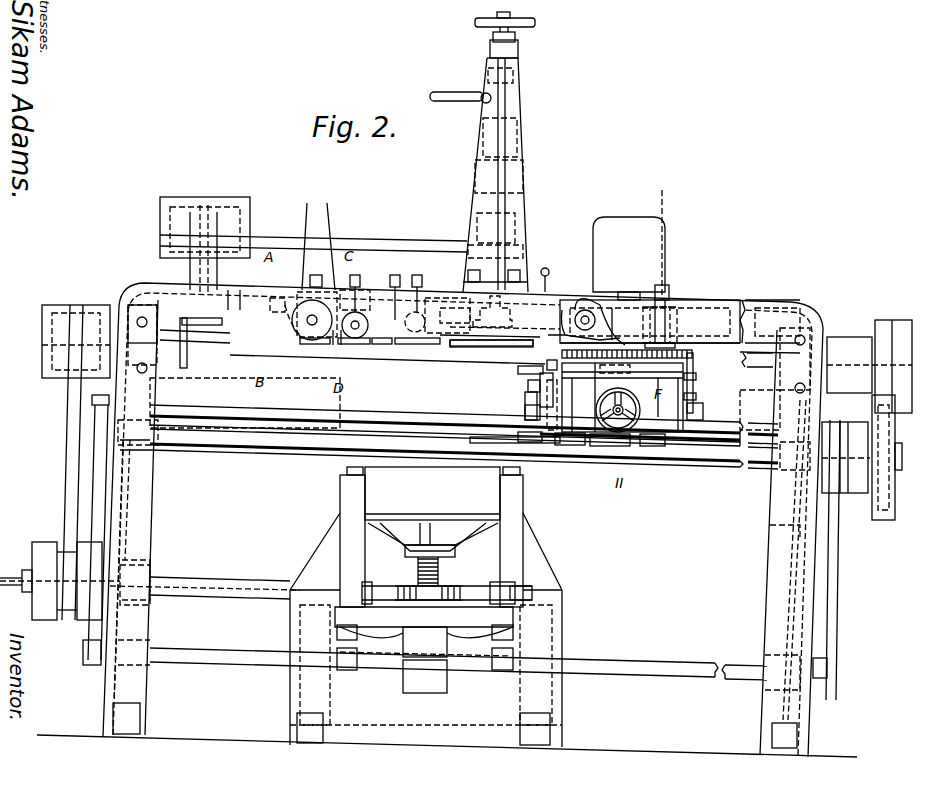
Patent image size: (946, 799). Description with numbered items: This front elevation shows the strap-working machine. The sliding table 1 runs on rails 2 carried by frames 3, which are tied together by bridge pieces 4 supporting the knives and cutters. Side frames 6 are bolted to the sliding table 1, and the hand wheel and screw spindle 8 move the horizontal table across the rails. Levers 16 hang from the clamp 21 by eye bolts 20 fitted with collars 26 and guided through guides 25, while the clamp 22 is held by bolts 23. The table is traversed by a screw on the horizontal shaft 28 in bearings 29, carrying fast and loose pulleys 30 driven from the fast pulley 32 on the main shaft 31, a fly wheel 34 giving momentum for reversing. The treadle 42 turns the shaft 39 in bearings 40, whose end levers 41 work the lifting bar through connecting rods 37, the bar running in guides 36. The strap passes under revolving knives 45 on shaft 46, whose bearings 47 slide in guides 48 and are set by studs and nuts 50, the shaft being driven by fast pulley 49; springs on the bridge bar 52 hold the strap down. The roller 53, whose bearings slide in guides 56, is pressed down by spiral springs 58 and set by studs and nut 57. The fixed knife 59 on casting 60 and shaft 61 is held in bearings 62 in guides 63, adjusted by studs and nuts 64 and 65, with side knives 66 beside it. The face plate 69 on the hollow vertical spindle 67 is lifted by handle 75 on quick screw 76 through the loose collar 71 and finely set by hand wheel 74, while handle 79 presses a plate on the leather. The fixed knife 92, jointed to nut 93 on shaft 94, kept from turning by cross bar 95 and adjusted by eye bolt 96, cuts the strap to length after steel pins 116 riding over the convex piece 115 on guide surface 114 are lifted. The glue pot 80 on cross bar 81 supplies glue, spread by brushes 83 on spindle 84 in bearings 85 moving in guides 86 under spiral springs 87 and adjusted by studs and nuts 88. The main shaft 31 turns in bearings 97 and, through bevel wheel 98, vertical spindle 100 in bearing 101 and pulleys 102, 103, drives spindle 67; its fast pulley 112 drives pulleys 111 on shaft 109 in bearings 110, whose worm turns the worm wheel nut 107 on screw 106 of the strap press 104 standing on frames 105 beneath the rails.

The sliding table 1 is at (652, 462).
The rails 2 is at (532, 458).
The frames 3 is at (152, 540).
The bridge pieces 4 is at (118, 300).
The side frames 6 is at (559, 473).
The hand wheel and screw spindle 8 is at (620, 395).
The levers 16 is at (700, 419).
The eye bolts 20 is at (703, 408).
The clamp 21 is at (535, 347).
The clamp 22 is at (710, 345).
The bolts 23 is at (700, 355).
The guides 25 is at (693, 375).
The collars 26 is at (696, 396).
The horizontal shaft 28 is at (262, 452).
The bearings 29 is at (154, 450).
The fast and loose pulleys 30 is at (842, 493).
The main shaft 31 is at (215, 345).
The fast pulley 32 is at (832, 337).
The fly wheel 34 is at (882, 520).
The guides 36 is at (210, 396).
The connecting rods 37 is at (92, 465).
The shaft 39 is at (232, 655).
The bearings 40 is at (128, 672).
The levers 41 is at (95, 665).
The treadle 42 is at (393, 663).
The revolving knives 45 is at (322, 290).
The shaft 46 is at (330, 340).
The bearings 47 is at (340, 342).
The guides 48 is at (330, 344).
The fast pulley 49 is at (305, 292).
The studs and nuts 50 is at (310, 280).
The bridge bar 52 is at (317, 318).
The roller 53 is at (358, 344).
The guides 56 is at (366, 320).
The studs and nut 57 is at (361, 288).
The spiral springs 58 is at (350, 305).
The fixed knife 59 is at (405, 344).
The casting 60 is at (430, 360).
The shaft 61 is at (285, 310).
The bearings 62 is at (270, 305).
The guides 63 is at (430, 300).
The studs and nuts 64 is at (418, 275).
The studs and nuts 65 is at (395, 275).
The knives 66 is at (378, 344).
The hollow vertical spindle 67 is at (520, 202).
The revolving horizontal disk or face plate 69 is at (478, 346).
The loose collar 71 is at (518, 150).
The hand wheel 74 is at (536, 22).
The handle 75 is at (493, 36).
The quick screw 76 is at (513, 79).
The handle 79 is at (458, 92).
The glue pot 80 is at (629, 254).
The cross bar 81 is at (632, 292).
The brushes 83 is at (680, 343).
The horizontal spindle 84 is at (675, 325).
The bearings 85 is at (675, 325).
The guides 86 is at (672, 315).
The spiral springs 87 is at (666, 305).
The studs and nuts 88 is at (663, 285).
The fixed knife 92 is at (583, 331).
The nut 93 is at (555, 322).
The shaft 94 is at (578, 312).
The cross bar 95 is at (580, 300).
The eye bolt 96 is at (612, 305).
The bearings 97 is at (142, 312).
The bevel wheel 98 is at (187, 362).
The vertical spindle 100 is at (195, 282).
The bearing 101 is at (232, 292).
The fast pulley 102 is at (160, 239).
The fast and loose pulley 103 is at (518, 246).
The strap press 104 is at (340, 493).
The frames 105 is at (563, 630).
The screw 106 is at (438, 568).
The worm wheel nut 107 is at (440, 600).
The shaft 109 is at (235, 580).
The bearings 110 is at (140, 567).
The fast and loose pulleys 111 is at (42, 542).
The fast pulley 112 is at (42, 330).
The guide surface 114 is at (590, 458).
The convex piece 115 is at (540, 443).
The steel pins 116 is at (558, 404).